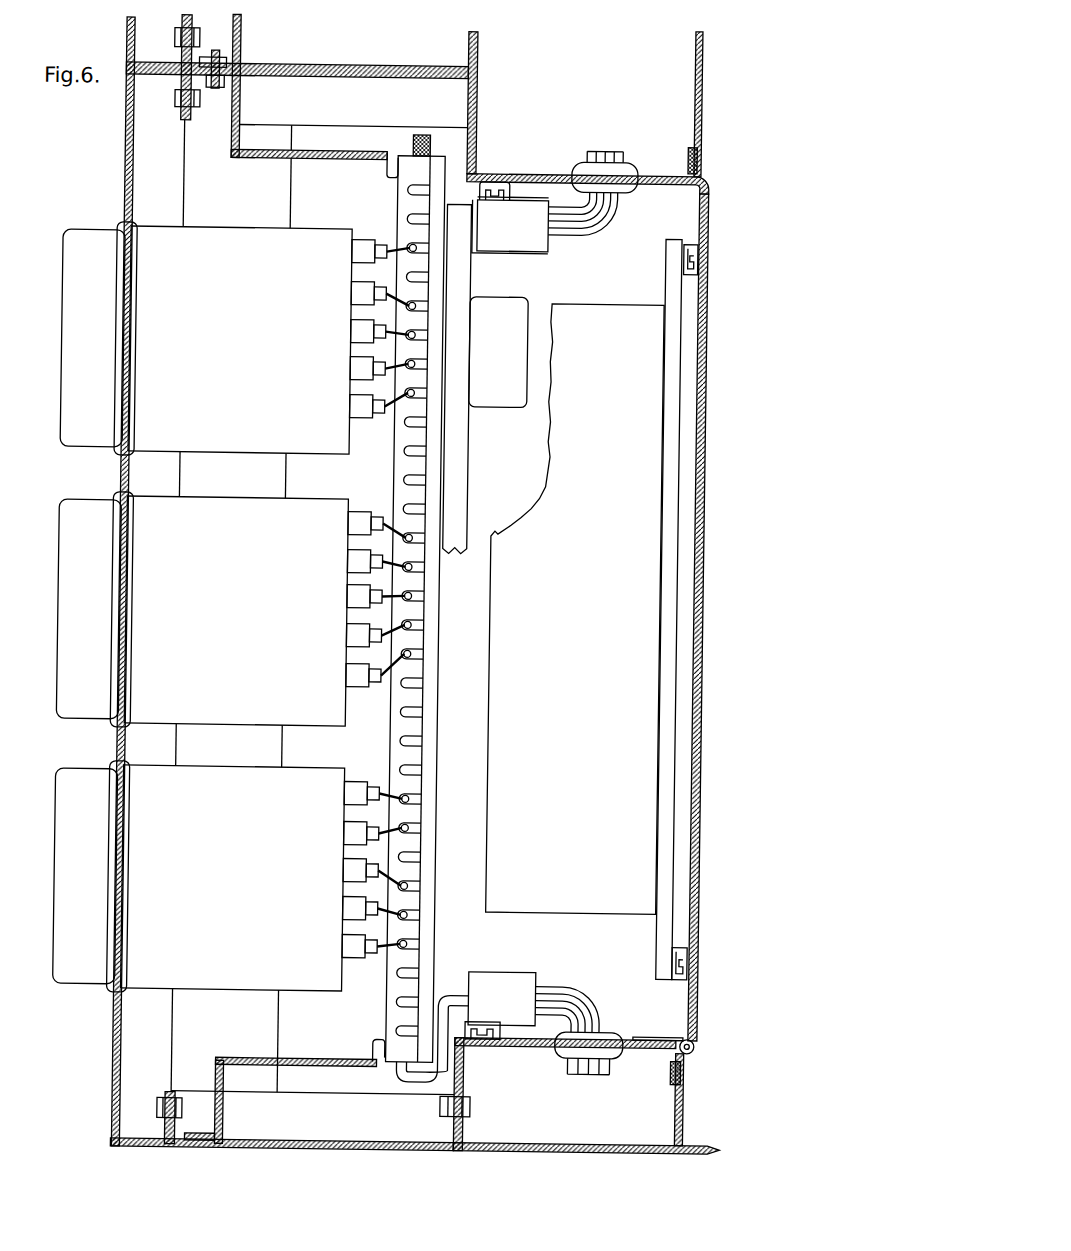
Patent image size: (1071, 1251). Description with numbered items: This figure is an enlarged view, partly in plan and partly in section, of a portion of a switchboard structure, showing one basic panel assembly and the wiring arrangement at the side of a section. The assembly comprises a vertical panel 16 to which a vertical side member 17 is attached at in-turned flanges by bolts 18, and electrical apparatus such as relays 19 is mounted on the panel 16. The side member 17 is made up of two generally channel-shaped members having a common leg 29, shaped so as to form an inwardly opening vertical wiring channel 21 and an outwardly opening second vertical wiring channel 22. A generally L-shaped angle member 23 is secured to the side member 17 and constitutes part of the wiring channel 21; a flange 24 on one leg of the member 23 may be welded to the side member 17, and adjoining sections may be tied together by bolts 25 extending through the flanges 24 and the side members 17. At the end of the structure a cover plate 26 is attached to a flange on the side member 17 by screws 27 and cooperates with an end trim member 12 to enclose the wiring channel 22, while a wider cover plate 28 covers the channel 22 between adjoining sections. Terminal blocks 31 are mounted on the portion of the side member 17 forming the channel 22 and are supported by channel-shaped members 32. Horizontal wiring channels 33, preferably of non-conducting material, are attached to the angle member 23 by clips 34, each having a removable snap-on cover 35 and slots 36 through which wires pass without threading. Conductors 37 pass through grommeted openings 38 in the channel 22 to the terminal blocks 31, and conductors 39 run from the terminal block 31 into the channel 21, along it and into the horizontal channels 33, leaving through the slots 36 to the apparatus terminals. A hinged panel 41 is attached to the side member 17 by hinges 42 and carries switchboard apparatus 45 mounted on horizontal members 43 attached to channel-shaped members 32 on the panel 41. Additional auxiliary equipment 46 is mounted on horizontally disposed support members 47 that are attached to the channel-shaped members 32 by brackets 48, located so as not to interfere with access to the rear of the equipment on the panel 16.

The end trim member 12 is at (598, 1150).
The vertical panel 16 is at (120, 33).
The vertical side member 17 is at (338, 66).
The bolt 18 is at (172, 36).
The relay 19 is at (312, 513).
The vertical wiring channel 21 is at (385, 51).
The second vertical wiring channel 22 is at (516, 142).
The L-shaped angle member 23 is at (234, 26).
The flange 24 is at (222, 90).
The bolt 25 is at (208, 53).
The cover plate 26 is at (691, 1107).
The screw 27 is at (692, 156).
The wider cover plate 28 is at (696, 85).
The common leg 29 is at (471, 101).
The terminal block 31 is at (528, 252).
The channel-shaped member 32 is at (492, 182).
The horizontal wiring channel 33 is at (392, 204).
The clip 34 is at (381, 166).
The removable snap-on cover 35 is at (432, 658).
The slot 36 is at (418, 625).
The conductor 37 is at (596, 150).
The grommeted opening 38 is at (620, 165).
The conductor 39 is at (448, 996).
The hinged panel 41 is at (700, 697).
The hinge 42 is at (701, 1043).
The horizontal member 43 is at (665, 931).
The switchboard apparatus 45 is at (501, 682).
The auxiliary equipment 46 is at (503, 400).
The horizontally disposed support member 47 is at (455, 280).
The bracket 48 is at (504, 191).